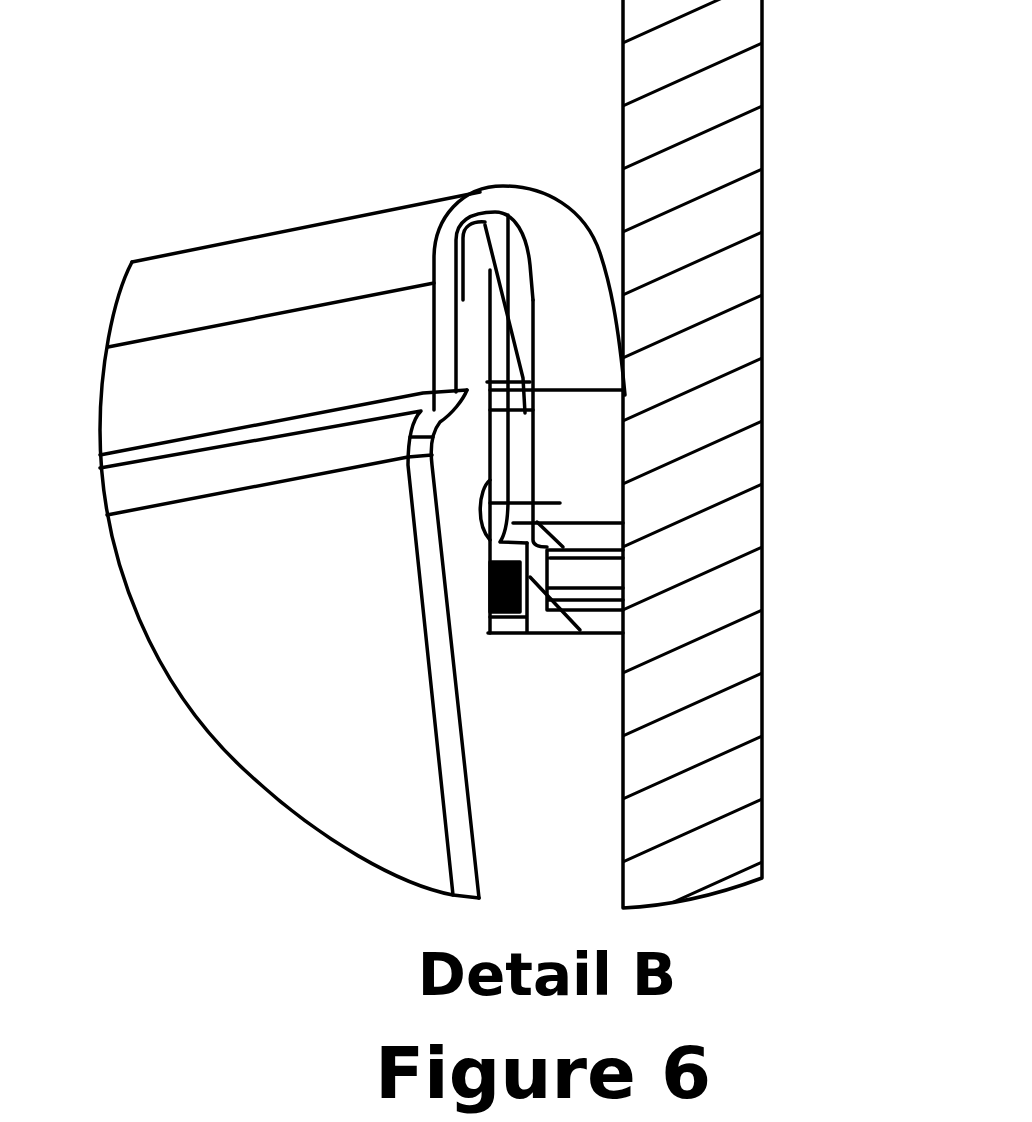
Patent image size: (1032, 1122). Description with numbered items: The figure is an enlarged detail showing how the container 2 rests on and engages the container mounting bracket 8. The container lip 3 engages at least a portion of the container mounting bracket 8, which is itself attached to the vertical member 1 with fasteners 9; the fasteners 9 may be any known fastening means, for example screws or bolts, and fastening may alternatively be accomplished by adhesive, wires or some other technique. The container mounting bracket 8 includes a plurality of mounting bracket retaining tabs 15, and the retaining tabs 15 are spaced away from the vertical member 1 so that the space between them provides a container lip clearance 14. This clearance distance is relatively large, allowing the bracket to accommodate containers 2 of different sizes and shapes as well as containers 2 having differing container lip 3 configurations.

The vertical member 1 is at (728, 748).
The container 2 is at (232, 662).
The container lip 3 is at (538, 242).
The container mounting bracket 8 is at (585, 463).
The fasteners 9 is at (562, 585).
The container lip clearance 14 is at (597, 383).
The mounting bracket retaining tabs 15 is at (520, 363).